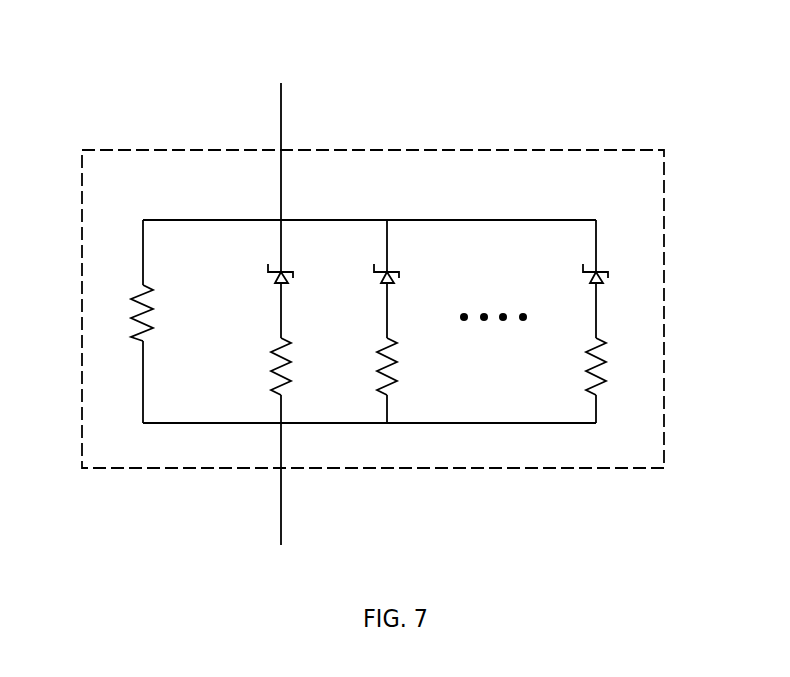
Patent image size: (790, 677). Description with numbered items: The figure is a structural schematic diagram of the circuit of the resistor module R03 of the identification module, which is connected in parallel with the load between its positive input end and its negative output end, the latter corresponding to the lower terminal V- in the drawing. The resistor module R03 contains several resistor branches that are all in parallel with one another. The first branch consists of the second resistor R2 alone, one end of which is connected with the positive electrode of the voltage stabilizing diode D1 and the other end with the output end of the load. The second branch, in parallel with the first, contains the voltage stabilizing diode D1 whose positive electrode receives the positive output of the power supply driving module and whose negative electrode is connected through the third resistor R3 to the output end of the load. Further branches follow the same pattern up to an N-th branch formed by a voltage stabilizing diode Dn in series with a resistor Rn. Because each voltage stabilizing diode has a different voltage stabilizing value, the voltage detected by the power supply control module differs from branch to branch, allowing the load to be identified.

The resistor module R03 is at (373, 259).
The negative supply terminal V- is at (251, 470).
The second resistor R2 is at (164, 321).
The third resistor R3 is at (304, 339).
The resistor Rn is at (574, 353).
The voltage stabilizing diode D1 is at (258, 265).
The voltage stabilizing diode Dn is at (575, 251).